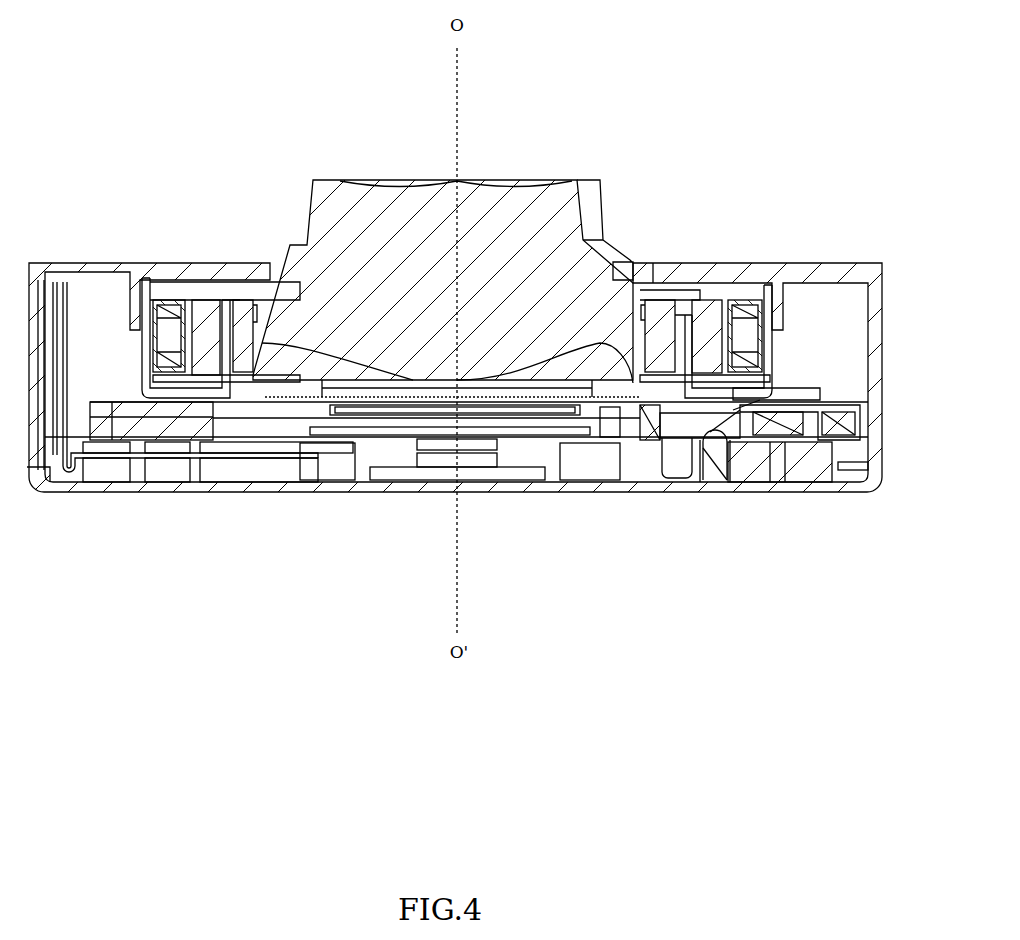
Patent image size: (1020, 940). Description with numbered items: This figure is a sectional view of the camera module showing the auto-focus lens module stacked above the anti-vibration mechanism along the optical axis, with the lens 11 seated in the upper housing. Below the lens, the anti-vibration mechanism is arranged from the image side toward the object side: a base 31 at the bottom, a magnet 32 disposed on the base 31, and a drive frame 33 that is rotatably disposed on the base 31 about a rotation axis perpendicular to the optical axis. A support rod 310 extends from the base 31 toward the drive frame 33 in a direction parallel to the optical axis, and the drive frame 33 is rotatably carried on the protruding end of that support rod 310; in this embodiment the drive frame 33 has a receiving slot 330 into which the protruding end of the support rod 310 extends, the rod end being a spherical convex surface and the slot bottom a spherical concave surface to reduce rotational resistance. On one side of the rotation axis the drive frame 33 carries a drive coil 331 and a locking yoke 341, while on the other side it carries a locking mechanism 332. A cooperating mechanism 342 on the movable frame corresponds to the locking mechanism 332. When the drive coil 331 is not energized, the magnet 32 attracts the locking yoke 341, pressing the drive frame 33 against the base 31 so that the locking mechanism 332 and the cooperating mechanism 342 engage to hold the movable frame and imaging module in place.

The lens 11 is at (325, 212).
The base 31 is at (468, 483).
The magnet 32 is at (757, 473).
The support rod 310 is at (712, 473).
The drive frame 33 is at (837, 407).
The receiving slot 330 is at (713, 432).
The drive coil 331 is at (853, 420).
The locking mechanism 332 is at (643, 412).
The locking yoke 341 is at (712, 415).
The cooperating mechanism 342 is at (657, 408).